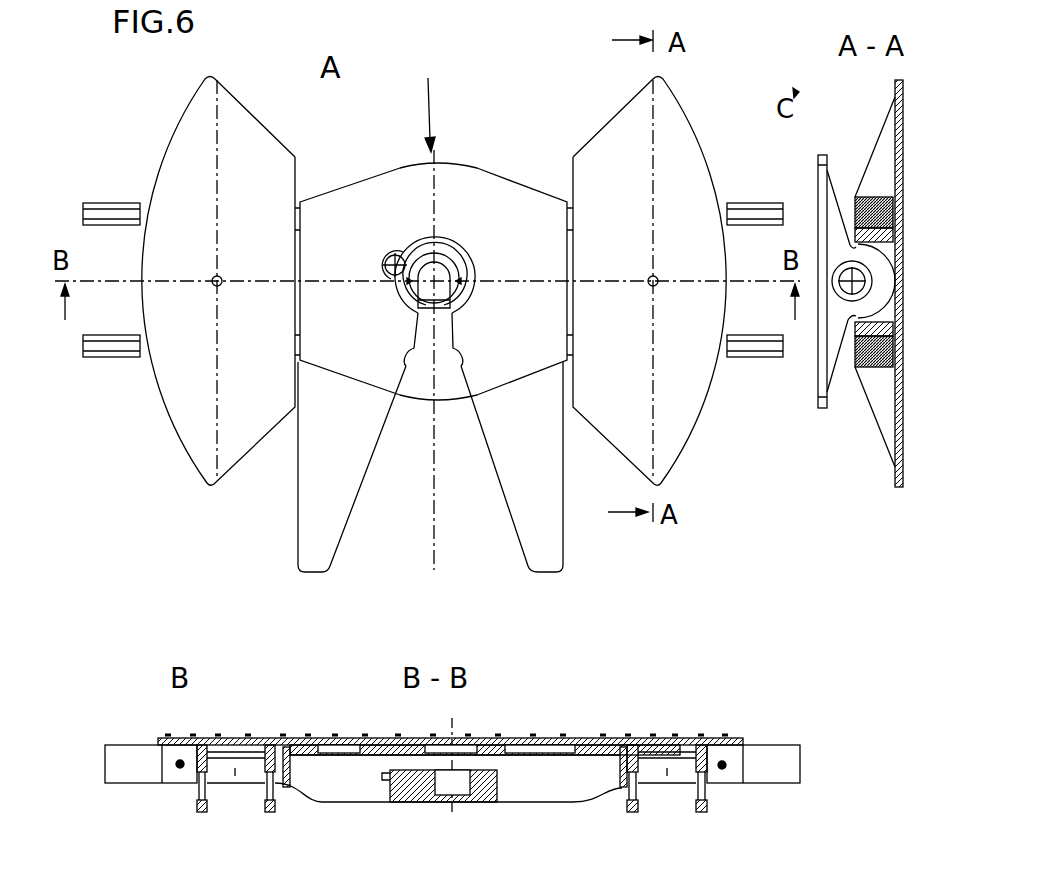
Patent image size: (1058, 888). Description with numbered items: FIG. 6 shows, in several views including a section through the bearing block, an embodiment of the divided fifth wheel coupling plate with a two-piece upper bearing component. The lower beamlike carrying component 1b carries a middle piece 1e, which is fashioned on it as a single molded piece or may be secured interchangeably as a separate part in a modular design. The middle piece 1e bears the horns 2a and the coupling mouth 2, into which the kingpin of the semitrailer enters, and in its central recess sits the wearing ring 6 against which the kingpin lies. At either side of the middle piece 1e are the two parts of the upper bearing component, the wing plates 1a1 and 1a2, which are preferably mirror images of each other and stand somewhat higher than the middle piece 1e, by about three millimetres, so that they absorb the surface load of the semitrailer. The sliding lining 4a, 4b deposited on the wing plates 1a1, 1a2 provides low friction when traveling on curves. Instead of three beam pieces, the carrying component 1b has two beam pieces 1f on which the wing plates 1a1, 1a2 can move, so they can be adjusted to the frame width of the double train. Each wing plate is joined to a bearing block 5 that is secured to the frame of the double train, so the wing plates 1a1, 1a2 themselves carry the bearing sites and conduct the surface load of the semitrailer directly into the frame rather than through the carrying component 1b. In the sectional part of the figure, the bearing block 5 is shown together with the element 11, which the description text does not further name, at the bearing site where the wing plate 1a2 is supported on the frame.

The wing plate 1a1 is at (193, 190).
The wing plate 1a2 is at (672, 412).
The carrying component 1b is at (422, 99).
The middle piece 1e is at (490, 222).
The beam pieces 1f is at (108, 222).
The coupling mouth 2 is at (410, 492).
The horns 2a is at (327, 477).
The sliding lining 4a is at (688, 737).
The sliding lining 4b is at (253, 725).
The bearing block 5 is at (817, 217).
The wearing ring 6 is at (410, 232).
The bearing bush 11 is at (873, 193).